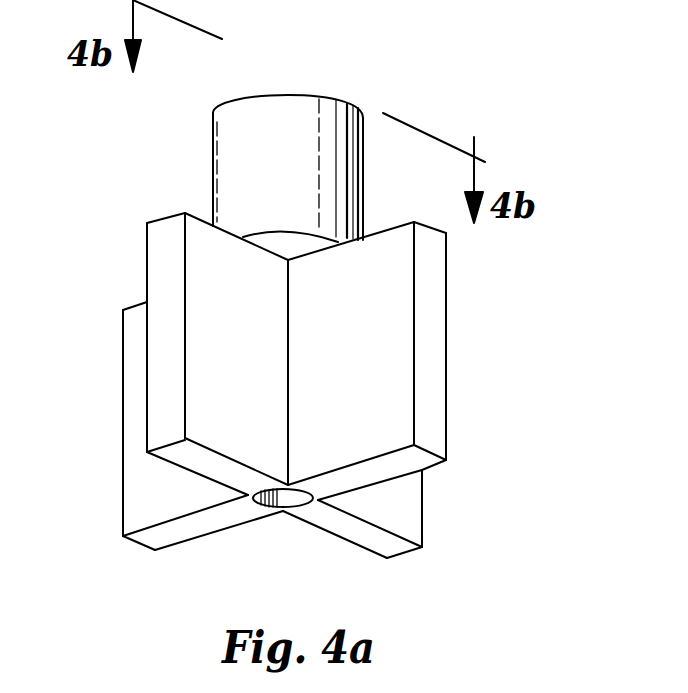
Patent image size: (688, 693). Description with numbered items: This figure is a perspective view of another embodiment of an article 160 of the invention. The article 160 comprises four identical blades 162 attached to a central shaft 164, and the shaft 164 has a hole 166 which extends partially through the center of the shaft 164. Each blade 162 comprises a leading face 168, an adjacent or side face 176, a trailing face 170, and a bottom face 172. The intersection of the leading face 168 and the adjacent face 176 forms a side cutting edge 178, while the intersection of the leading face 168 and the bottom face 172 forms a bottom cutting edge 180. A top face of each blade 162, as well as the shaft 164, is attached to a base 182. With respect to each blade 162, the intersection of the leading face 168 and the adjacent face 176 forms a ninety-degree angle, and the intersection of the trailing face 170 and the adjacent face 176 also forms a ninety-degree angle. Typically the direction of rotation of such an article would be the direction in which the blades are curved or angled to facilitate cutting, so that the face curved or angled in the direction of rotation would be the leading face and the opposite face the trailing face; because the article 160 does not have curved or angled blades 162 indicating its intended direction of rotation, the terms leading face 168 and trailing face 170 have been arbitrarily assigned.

The article 160 is at (387, 90).
The blade 162 is at (168, 200).
The central shaft 164 is at (300, 500).
The hole 166 is at (281, 508).
The leading face 168 is at (393, 397).
The trailing face 170 is at (221, 430).
The bottom face 172 is at (384, 548).
The adjacent face 176 is at (160, 366).
The side cutting edge 178 is at (415, 330).
The bottom cutting edge 180 is at (185, 468).
The base 182 is at (262, 112).